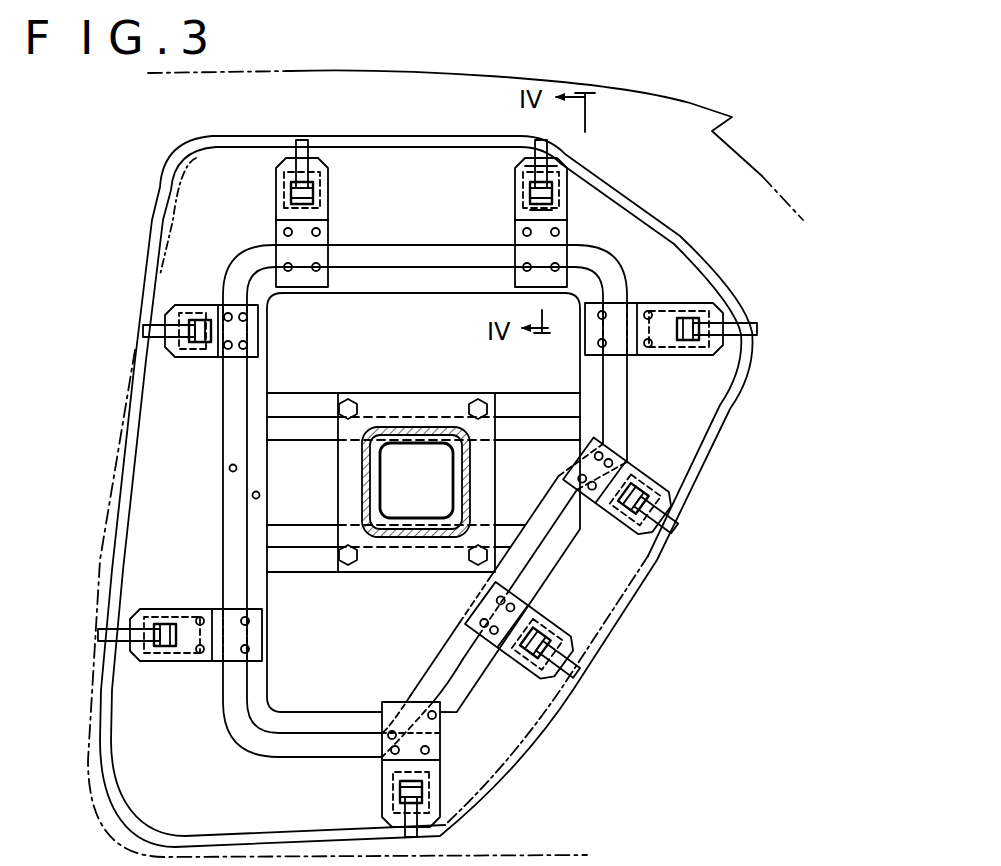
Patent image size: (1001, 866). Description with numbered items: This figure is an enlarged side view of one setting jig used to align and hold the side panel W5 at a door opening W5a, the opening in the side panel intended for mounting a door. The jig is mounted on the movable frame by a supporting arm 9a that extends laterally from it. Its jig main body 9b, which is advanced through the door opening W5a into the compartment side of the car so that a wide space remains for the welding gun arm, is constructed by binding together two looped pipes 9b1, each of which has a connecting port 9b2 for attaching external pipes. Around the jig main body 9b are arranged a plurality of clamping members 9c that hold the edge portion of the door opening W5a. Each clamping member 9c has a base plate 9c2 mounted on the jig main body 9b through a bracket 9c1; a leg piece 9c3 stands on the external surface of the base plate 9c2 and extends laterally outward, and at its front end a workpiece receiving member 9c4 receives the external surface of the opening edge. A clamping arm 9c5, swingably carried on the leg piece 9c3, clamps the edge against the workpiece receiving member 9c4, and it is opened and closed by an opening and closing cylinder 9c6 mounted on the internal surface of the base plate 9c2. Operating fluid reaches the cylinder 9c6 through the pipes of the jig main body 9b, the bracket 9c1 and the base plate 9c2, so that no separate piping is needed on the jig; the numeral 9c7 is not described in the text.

The side panel W5 is at (360, 72).
The door opening W5a is at (195, 173).
The supporting arm 9a is at (426, 540).
The jig main body 9b is at (630, 258).
The looped pipes 9b1 is at (378, 258).
The connecting port 9b2 is at (252, 495).
The clamping member 9c is at (511, 230).
The bracket 9c1 is at (516, 258).
The base plate 9c2 is at (514, 182).
The leg piece 9c3 is at (560, 190).
The workpiece receiving member 9c4 is at (535, 142).
The clamping arm 9c5 is at (572, 212).
The opening and closing cylinder 9c6 is at (560, 200).
The nut 9c7 is at (530, 216).